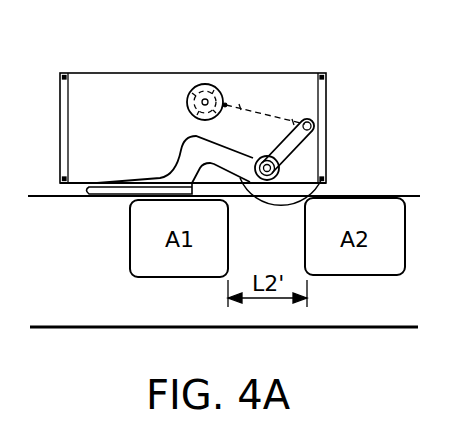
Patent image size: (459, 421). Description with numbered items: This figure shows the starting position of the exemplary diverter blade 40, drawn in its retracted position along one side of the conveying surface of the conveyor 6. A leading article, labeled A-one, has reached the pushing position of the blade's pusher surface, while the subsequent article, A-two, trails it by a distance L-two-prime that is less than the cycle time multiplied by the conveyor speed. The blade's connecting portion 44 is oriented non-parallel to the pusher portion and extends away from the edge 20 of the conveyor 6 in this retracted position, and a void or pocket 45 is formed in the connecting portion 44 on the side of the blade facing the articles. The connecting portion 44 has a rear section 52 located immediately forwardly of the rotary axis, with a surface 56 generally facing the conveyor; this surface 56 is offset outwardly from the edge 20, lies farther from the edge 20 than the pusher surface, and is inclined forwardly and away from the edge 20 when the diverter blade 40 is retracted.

The conveyor 6 is at (80, 312).
The edge of the conveyor 20 is at (405, 194).
The diverter blade 40 is at (178, 152).
The connecting portion 44 is at (98, 197).
The void or pocket 45 is at (212, 176).
The rear section 52 is at (220, 150).
The surface 56 is at (322, 178).